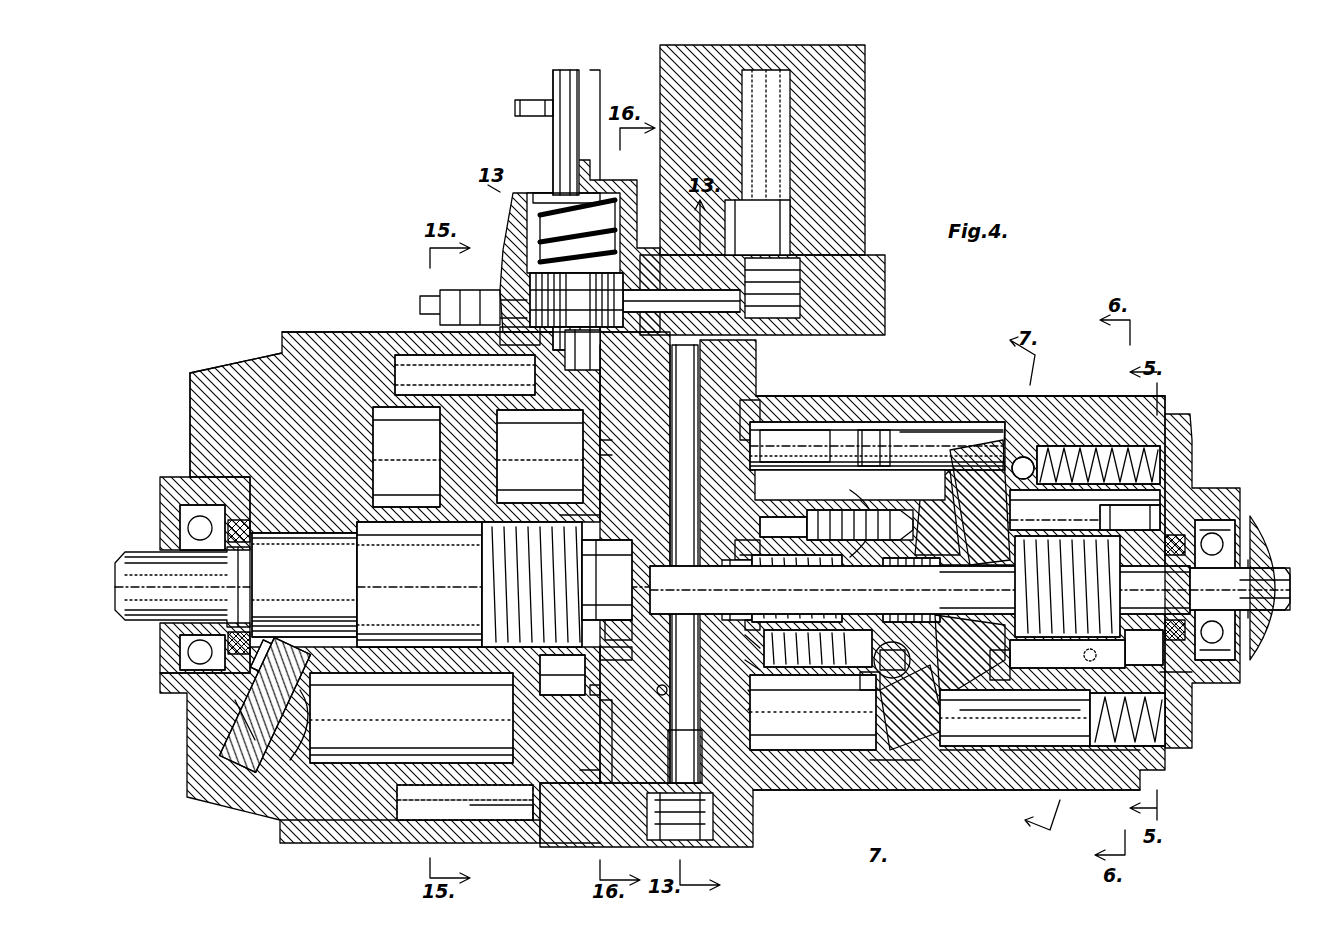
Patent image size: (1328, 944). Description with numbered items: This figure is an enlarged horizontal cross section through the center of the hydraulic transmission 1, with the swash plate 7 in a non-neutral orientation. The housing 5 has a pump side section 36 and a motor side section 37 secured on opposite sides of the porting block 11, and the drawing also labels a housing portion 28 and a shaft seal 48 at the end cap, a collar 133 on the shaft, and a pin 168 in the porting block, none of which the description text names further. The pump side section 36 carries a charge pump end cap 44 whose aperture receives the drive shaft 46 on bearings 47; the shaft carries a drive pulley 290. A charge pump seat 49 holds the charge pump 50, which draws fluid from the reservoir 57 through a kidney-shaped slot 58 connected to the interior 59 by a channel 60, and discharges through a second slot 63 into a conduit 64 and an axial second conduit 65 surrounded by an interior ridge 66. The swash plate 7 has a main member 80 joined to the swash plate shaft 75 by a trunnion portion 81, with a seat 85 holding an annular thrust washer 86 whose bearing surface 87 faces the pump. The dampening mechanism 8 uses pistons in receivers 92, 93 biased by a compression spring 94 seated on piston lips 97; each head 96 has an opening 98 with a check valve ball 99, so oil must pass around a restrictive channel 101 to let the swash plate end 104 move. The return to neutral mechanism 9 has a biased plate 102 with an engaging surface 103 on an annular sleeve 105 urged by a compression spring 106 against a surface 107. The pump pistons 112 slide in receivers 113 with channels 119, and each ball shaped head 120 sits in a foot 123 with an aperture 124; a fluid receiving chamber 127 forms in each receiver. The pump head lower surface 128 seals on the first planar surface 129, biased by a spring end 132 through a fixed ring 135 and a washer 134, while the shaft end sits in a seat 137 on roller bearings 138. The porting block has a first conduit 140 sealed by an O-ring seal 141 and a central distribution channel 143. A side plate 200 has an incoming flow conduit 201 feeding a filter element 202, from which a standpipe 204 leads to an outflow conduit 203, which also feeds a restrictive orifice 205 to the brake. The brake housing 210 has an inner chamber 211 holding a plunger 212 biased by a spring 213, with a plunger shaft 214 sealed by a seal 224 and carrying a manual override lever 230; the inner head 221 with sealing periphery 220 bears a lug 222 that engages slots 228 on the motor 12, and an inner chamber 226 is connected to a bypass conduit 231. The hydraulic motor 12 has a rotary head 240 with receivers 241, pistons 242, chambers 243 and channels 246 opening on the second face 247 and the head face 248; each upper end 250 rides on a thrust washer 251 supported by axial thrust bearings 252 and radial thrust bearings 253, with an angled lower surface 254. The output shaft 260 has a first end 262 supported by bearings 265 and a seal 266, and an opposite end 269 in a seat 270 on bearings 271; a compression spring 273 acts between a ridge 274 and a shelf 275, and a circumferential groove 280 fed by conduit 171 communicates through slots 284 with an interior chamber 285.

The hydraulic transmission 1 is at (283, 243).
The housing 5 is at (288, 333).
The swash plate 7 is at (960, 445).
The dampening mechanism 8 is at (1055, 748).
The return to neutral mechanism 9 is at (994, 696).
The porting block 11 is at (714, 806).
The hydraulic motor 12 is at (352, 590).
The housing section 28 is at (858, 396).
The pump side housing section 36 is at (1030, 400).
The motor side housing section 37 is at (360, 332).
The charge pump end cap 44 is at (1196, 455).
The drive shaft 46 is at (1285, 568).
The bearings 47 is at (1218, 518).
The seal 48 is at (1170, 645).
The charge pump seat 49 is at (1120, 520).
The charge pump 50 is at (1165, 672).
The reservoir 57 is at (955, 758).
The kidney-shaped slot 58 is at (1150, 660).
The interior 59 is at (805, 760).
The channel 60 is at (1100, 668).
The second kidney-shaped slot 63 is at (1095, 520).
The conduit 64 is at (1075, 502).
The second conduit 65 is at (872, 432).
The interior ridge 66 is at (790, 430).
The swash plate shaft 75 is at (940, 604).
The main member 80 is at (935, 700).
The trunnion portion 81 is at (855, 650).
The interior seat 85 is at (945, 625).
The annular thrust washer 86 is at (875, 690).
The bearing surface 87 is at (945, 485).
The receiver 92 is at (1125, 748).
The receiver 93 is at (1115, 446).
The compression spring 94 is at (1090, 714).
The head 96 is at (900, 770).
The piston lips 97 is at (1050, 446).
The opening 98 is at (945, 458).
The check valve ball 99 is at (1022, 455).
The restrictive channel 101 is at (980, 760).
The biased plate 102 is at (990, 682).
The swash plate engaging surface 103 is at (990, 660).
The end 104 is at (1000, 425).
The annular sleeve 105 is at (1050, 668).
The compression spring 106 is at (1100, 588).
The surface 107 is at (1020, 615).
The piston 112 is at (808, 515).
The receiver 113 is at (770, 515).
The channel 119 is at (745, 670).
The ball shaped head 120 is at (868, 680).
The foot 123 is at (935, 487).
The aperture 124 is at (900, 725).
The fluid receiving chamber 127 is at (793, 470).
The lower surface 128 is at (745, 648).
The first planar surface 129 is at (748, 700).
The end 132 is at (800, 578).
The collar 133 is at (760, 582).
The washer 134 is at (748, 628).
The fixed ring 135 is at (848, 510).
The seat 137 is at (745, 540).
The roller bearings 138 is at (740, 555).
The first conduit 140 is at (700, 480).
The O-ring seal 141 is at (745, 425).
The central distribution channel 143 is at (670, 418).
The pin 168 is at (700, 742).
The conduit 171 is at (603, 742).
The side plate 200 is at (885, 262).
The incoming flow conduit 201 is at (705, 215).
The filter element 202 is at (866, 135).
The outflow conduit 203 is at (770, 312).
The standpipe 204 is at (792, 106).
The restrictive orifice 205 is at (660, 300).
The brake housing 210 is at (518, 180).
The inner chamber 211 is at (533, 232).
The plunger 212 is at (605, 340).
The spring 213 is at (530, 205).
The plunger shaft 214 is at (562, 131).
The sealing periphery 220 is at (520, 282).
The inner head 221 is at (550, 336).
The lug 222 is at (545, 368).
The seal 224 is at (612, 180).
The inner chamber 226 is at (500, 340).
The slots 228 is at (606, 398).
The manual override lever 230 is at (528, 100).
The bypass conduit 231 is at (420, 300).
The rotary head 240 is at (455, 790).
The receiver 241 is at (497, 480).
The piston 242 is at (435, 430).
The fluid receiving chamber 243 is at (513, 690).
The channel 246 is at (590, 688).
The second face 247 is at (600, 690).
The face 248 is at (605, 448).
The upper end 250 is at (290, 780).
The thrust washer 251 is at (290, 705).
The axial thrust bearings 252 is at (240, 695).
The radial thrust bearings 253 is at (300, 685).
The lower surface 254 is at (305, 722).
The shaft 260 is at (145, 550).
The first end 262 is at (148, 625).
The bearings 265 is at (195, 510).
The seal 266 is at (233, 522).
The opposite end 269 is at (622, 635).
The seat 270 is at (612, 660).
The bearings 271 is at (600, 545).
The compression spring 273 is at (480, 572).
The ridge 274 is at (495, 598).
The shelf 275 is at (595, 510).
The circumferential groove 280 is at (598, 780).
The slots 284 is at (598, 805).
The interior chamber 285 is at (500, 825).
The drive pulley 290 is at (1265, 660).